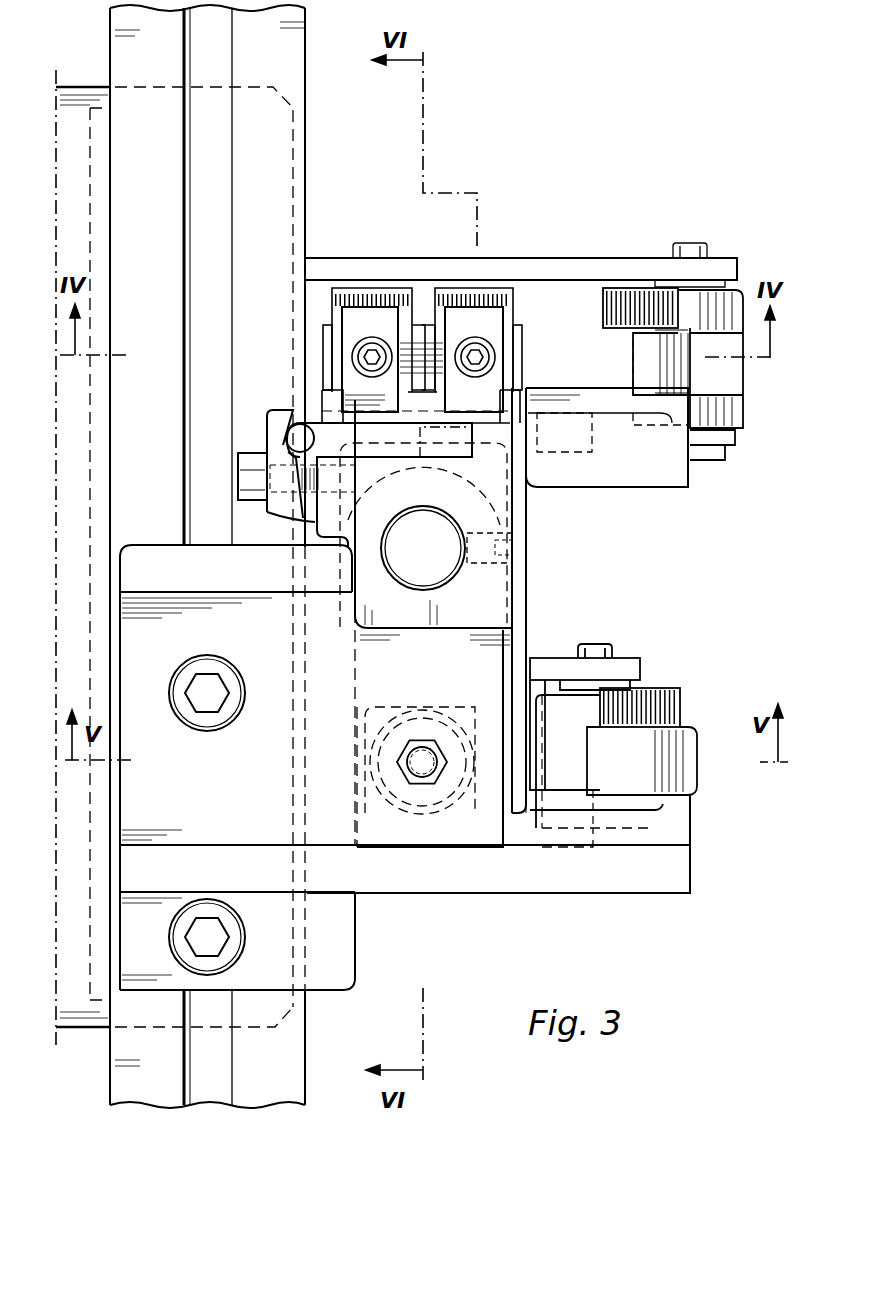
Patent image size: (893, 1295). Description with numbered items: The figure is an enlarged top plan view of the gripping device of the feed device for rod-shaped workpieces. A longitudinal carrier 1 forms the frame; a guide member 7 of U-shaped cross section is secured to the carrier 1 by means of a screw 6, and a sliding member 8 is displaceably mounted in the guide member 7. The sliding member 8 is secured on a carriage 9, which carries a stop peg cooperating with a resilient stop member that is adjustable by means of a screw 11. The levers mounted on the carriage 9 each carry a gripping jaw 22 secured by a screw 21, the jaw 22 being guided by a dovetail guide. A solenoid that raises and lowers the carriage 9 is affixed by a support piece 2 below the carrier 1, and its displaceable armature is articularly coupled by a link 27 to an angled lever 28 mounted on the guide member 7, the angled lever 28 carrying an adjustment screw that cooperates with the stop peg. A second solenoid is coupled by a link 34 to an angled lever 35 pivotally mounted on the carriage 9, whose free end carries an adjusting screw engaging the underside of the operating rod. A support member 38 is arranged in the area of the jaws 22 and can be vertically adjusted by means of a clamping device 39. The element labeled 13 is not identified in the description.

The longitudinal carrier 1 is at (285, 42).
The support piece 2 is at (80, 96).
The screw 6 is at (180, 693).
The guide member 7 is at (480, 873).
The sliding member 8 is at (444, 519).
The carriage 9 is at (668, 475).
The screw 11 is at (422, 775).
The hidden slot 13 is at (506, 545).
The screw 21 is at (380, 345).
The gripping jaw 22 is at (480, 328).
The link 27 is at (544, 662).
The angled lever 28 is at (665, 760).
The link 34 is at (580, 262).
The angled lever 35 is at (690, 374).
The support member 38 is at (320, 431).
The clamping device 39 is at (268, 433).